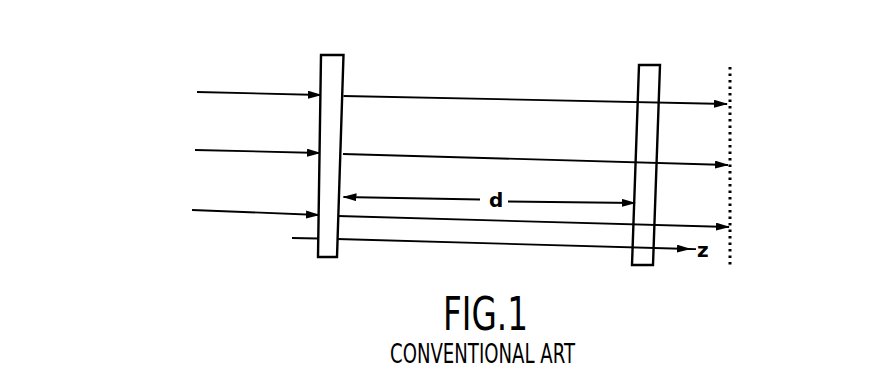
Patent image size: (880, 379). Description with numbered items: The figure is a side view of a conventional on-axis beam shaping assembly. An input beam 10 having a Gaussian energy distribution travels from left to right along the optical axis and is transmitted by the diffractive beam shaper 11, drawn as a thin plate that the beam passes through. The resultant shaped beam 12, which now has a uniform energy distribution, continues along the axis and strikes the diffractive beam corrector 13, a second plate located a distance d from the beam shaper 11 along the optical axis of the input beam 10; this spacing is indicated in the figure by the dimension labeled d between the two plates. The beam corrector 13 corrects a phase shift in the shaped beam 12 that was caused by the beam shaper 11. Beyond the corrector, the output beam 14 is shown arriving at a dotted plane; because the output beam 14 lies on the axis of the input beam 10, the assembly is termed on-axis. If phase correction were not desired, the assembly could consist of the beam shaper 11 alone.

The input beam 10 is at (252, 75).
The diffractive beam shaper 11 is at (320, 257).
The shaped beam 12 is at (639, 100).
The diffractive beam corrector 13 is at (651, 265).
The output beam 14 is at (733, 133).